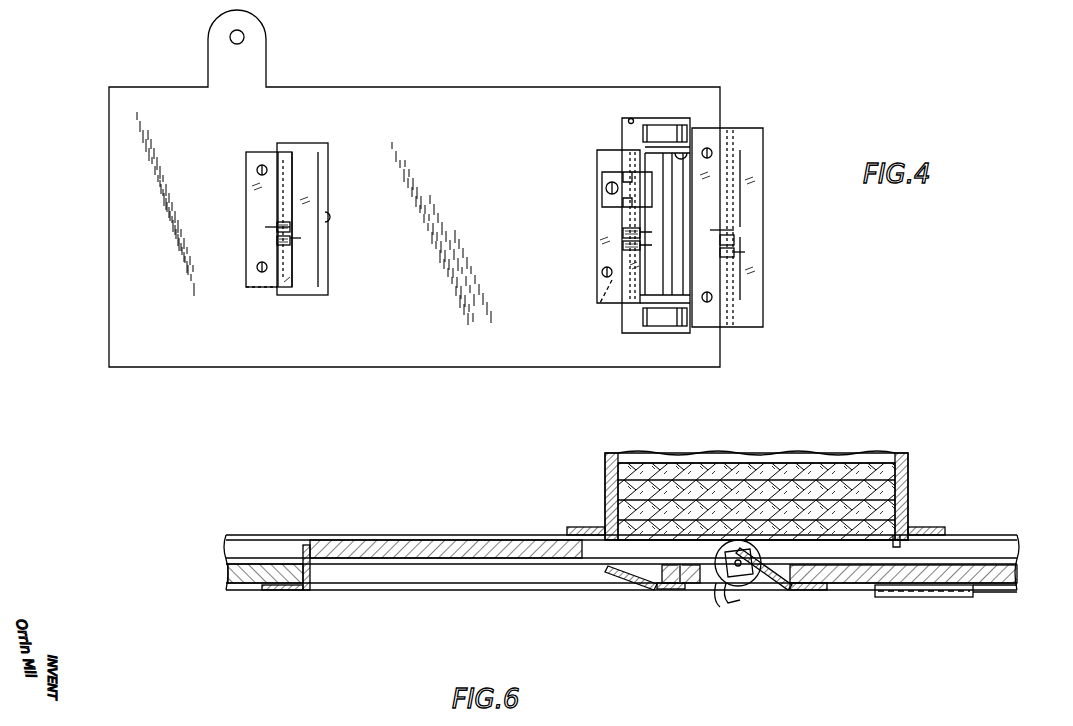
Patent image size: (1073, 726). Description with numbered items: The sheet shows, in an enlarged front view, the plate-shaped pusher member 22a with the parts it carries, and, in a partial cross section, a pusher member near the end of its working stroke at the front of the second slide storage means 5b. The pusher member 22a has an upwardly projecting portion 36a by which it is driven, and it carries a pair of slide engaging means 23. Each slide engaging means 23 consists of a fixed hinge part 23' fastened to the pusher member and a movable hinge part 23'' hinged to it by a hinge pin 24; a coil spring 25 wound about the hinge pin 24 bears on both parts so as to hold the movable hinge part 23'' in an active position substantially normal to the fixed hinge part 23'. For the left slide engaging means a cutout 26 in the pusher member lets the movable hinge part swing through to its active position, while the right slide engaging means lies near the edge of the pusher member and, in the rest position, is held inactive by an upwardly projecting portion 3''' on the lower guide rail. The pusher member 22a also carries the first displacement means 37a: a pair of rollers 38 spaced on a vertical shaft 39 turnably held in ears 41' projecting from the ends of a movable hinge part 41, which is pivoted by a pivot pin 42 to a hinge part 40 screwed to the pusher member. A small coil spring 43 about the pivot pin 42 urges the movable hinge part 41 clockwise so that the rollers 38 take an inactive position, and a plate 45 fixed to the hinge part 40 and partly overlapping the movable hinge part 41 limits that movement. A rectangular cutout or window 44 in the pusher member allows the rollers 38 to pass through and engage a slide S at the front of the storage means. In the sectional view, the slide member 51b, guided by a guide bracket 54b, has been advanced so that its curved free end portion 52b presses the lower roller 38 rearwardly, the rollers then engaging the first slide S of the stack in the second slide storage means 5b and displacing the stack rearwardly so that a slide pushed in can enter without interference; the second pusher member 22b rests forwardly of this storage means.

In FIG. 4, the pusher member 22a is at (478, 152).
In FIG. 6, the pusher member 22a is at (238, 588).
In FIG. 4, the projecting portion 36a is at (268, 60).
In FIG. 4, the slide engaging means 23 is at (525, 219).
In FIG. 6, the slide engaging means 23 is at (263, 648).
In FIG. 4, the fixed hinge part 23' is at (502, 155).
In FIG. 6, the fixed hinge part 23' is at (275, 611).
In FIG. 4, the movable hinge part 23'' is at (566, 155).
In FIG. 6, the movable hinge part 23'' is at (621, 598).
In FIG. 4, the hinge pin 24 is at (290, 297).
In FIG. 6, the hinge pin 24 is at (306, 592).
In FIG. 4, the coil spring 25 is at (270, 218).
In FIG. 4, the cutout 26 is at (328, 217).
In FIG. 4, the rectangular cutout or window 44 is at (631, 118).
In FIG. 4, the rollers 38 is at (659, 126).
In FIG. 6, the rollers 38 is at (725, 575).
In FIG. 4, the ears 41' is at (703, 225).
In FIG. 4, the movable hinge part 41 is at (692, 224).
In FIG. 4, the hinge part 40 is at (600, 240).
In FIG. 4, the plate 45 is at (604, 201).
In FIG. 4, the coil spring 43 is at (612, 232).
In FIG. 4, the pivot pin 42 is at (598, 312).
In FIG. 4, the vertical shaft 39 is at (665, 295).
In FIG. 4, the first displacement means 37a is at (698, 282).
In FIG. 6, the first displacement means 37a is at (816, 594).
In FIG. 6, the slide S is at (445, 538).
In FIG. 6, the second slide storage means 5b is at (912, 470).
In FIG. 6, the upwardly projecting portion 3''' is at (678, 605).
In FIG. 6, the slide member 51b is at (760, 585).
In FIG. 6, the free end portion 52b is at (725, 605).
In FIG. 6, the second pusher member 22b is at (880, 583).
In FIG. 6, the guide bracket 54b is at (925, 598).